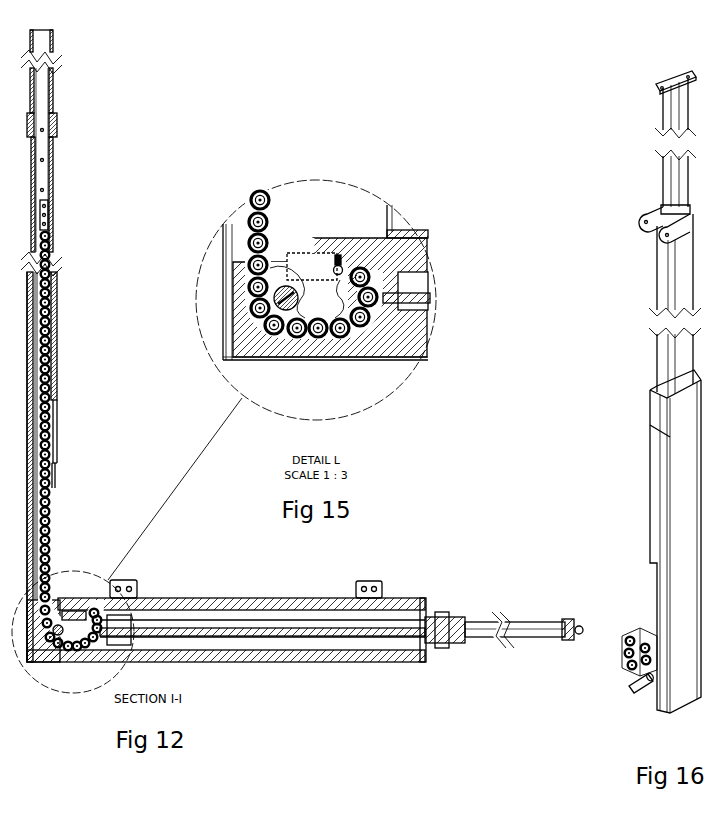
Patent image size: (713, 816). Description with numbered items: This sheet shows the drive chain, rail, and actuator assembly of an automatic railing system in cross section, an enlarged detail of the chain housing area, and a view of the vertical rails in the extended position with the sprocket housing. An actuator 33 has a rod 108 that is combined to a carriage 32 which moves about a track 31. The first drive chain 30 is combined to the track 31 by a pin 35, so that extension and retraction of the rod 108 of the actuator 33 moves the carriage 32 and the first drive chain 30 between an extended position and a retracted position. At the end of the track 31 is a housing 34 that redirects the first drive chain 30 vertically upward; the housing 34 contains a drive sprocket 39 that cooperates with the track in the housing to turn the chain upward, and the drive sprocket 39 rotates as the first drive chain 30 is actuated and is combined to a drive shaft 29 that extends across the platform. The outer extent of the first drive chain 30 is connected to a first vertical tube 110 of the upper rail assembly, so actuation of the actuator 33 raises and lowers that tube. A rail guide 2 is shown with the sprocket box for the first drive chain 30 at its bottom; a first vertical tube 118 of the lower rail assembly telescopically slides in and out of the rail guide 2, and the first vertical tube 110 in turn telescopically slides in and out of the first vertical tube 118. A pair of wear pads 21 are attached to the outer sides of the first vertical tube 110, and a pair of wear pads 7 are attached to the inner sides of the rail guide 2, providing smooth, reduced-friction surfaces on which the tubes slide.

In FIG. 12, the rail guide 2 is at (213, 361).
In FIG. 16, the rail guide 2 is at (658, 478).
In FIG. 12, the wear pads 7 is at (13, 467).
In FIG. 16, the wear pads 7 is at (655, 392).
In FIG. 16, the wear pads 21 is at (658, 202).
In FIG. 16, the drive shaft 29 is at (633, 689).
In FIG. 12, the first drive chain 30 is at (71, 441).
In FIG. 15, the first drive chain 30 is at (246, 208).
In FIG. 15, the track 31 is at (418, 350).
In FIG. 15, the carriage 32 is at (386, 267).
In FIG. 12, the actuator 33 is at (533, 630).
In FIG. 15, the housing 34 is at (246, 343).
In FIG. 15, the pin 35 is at (338, 258).
In FIG. 15, the drive sprocket 39 is at (262, 287).
In FIG. 16, the drive sprocket 39 is at (636, 637).
In FIG. 15, the rod 108 is at (432, 298).
In FIG. 16, the first vertical tube 110 is at (672, 108).
In FIG. 16, the first vertical tube 118 is at (662, 272).